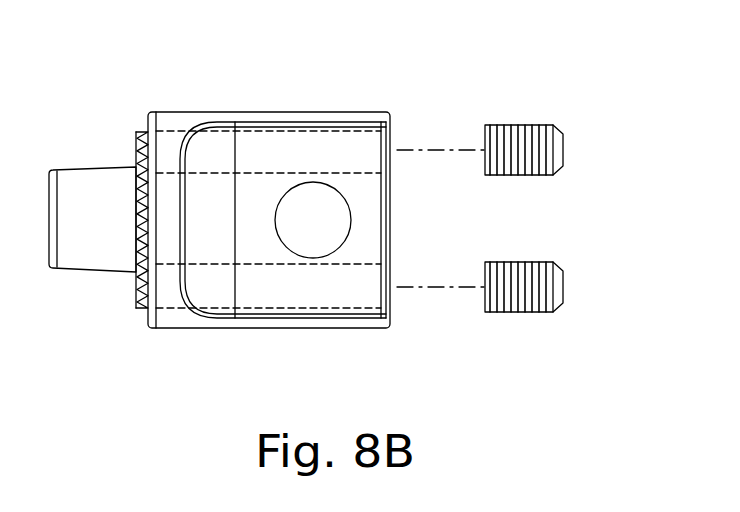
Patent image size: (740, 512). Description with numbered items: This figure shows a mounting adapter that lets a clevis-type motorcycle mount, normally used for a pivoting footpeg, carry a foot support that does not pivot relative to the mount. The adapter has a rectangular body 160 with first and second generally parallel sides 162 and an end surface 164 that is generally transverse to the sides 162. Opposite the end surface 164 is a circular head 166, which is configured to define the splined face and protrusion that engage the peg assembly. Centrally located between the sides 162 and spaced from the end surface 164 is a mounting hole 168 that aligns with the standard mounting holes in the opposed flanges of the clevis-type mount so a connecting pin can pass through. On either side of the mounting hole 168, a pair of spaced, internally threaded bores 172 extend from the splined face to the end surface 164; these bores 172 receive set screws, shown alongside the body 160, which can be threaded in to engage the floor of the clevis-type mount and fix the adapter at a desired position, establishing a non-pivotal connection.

The rectangular body 160 is at (288, 113).
The sides 162 is at (347, 111).
The end surface 164 is at (390, 212).
The circular head 166 is at (164, 111).
The mounting hole 168 is at (297, 238).
The internally threaded bores 172 is at (177, 128).